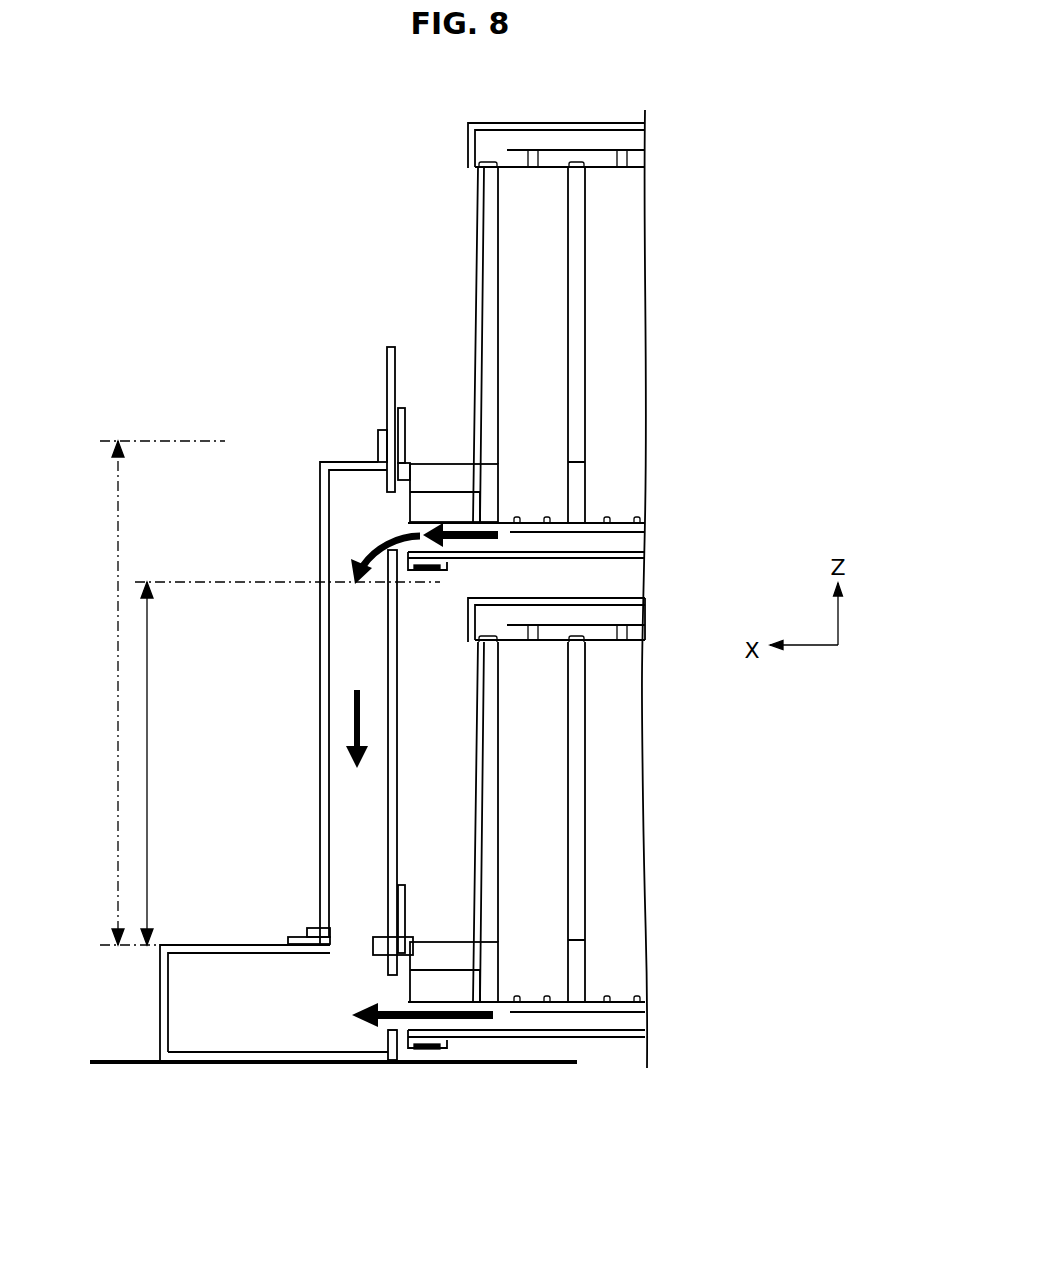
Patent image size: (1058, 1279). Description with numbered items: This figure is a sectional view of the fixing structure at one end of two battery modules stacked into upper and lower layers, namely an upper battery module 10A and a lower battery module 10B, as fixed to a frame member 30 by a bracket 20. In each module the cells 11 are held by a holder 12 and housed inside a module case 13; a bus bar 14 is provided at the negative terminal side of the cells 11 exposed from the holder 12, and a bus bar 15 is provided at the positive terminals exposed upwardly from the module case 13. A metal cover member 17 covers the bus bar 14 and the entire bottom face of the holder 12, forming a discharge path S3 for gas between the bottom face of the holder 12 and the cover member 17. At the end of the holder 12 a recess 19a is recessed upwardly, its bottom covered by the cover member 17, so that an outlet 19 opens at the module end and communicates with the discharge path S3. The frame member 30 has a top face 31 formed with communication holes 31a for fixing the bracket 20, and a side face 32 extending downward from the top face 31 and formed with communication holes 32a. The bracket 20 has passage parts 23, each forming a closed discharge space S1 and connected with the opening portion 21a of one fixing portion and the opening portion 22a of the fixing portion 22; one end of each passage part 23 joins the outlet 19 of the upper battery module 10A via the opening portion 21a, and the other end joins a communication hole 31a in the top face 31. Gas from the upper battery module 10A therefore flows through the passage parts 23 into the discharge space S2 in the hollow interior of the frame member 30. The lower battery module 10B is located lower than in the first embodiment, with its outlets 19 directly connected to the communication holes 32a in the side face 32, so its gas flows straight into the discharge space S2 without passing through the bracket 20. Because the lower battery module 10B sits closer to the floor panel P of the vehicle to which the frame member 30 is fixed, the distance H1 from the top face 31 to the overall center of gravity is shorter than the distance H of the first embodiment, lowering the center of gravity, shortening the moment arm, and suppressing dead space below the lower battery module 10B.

The upper battery module 10A is at (620, 122).
The lower battery module 10B is at (614, 596).
The cell 11 is at (523, 349).
The holder 12 is at (440, 462).
The module case 13 is at (475, 232).
The bus bar 14 is at (540, 534).
The bus bar 15 is at (555, 150).
The cover member 17 is at (473, 558).
The outlet 19 is at (402, 524).
The recess 19a is at (422, 510).
The bracket 20 is at (385, 372).
The opening portion 21a is at (395, 494).
The fixing portion 22 is at (290, 937).
The opening portion 22a is at (318, 928).
The passage part 23 is at (322, 680).
The frame member 30 is at (158, 1003).
The top face 31 is at (232, 945).
The communication hole 31a is at (336, 946).
The side face 32 is at (390, 1035).
The communication hole 32a is at (386, 1045).
The distance H is at (117, 716).
The distance H1 is at (150, 742).
The floor panel P is at (128, 1065).
The discharge space S1 is at (345, 800).
The discharge space S2 is at (222, 1035).
The discharge path S3 is at (563, 541).